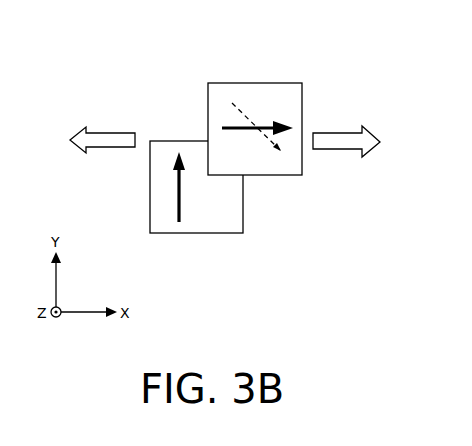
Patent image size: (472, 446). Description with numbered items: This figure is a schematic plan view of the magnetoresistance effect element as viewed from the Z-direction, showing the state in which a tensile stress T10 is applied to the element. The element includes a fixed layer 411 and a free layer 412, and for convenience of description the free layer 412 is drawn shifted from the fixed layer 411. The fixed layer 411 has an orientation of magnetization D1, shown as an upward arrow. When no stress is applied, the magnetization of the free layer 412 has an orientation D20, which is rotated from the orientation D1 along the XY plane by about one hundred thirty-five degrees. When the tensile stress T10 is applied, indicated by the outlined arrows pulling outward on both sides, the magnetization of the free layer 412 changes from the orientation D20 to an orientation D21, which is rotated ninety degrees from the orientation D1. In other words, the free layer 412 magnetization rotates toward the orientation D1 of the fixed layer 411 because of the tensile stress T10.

The tensile stress T10 is at (98, 137).
The orientation of magnetization D20 is at (247, 128).
The orientation of magnetization D21 is at (232, 127).
The orientation of magnetization D1 is at (180, 193).
The fixed layer 411 is at (232, 215).
The free layer 412 is at (265, 167).